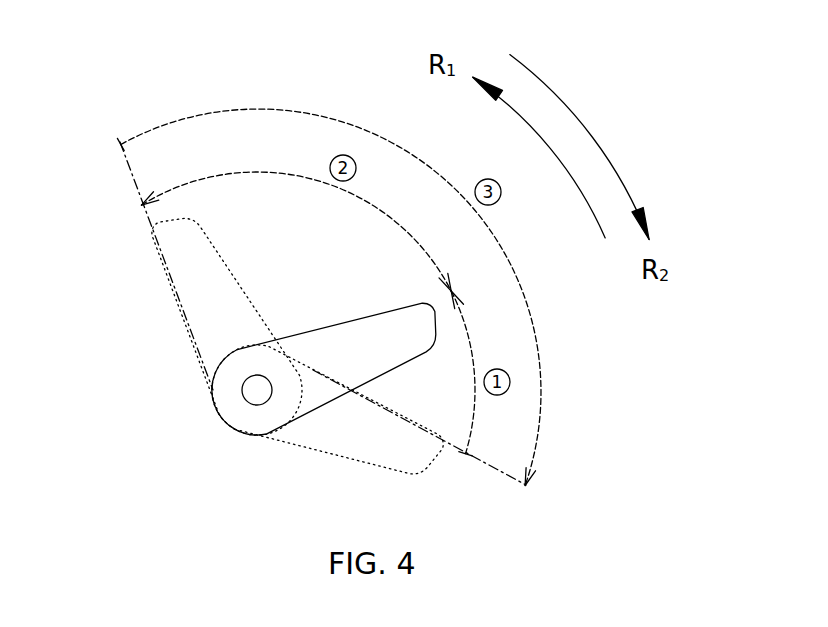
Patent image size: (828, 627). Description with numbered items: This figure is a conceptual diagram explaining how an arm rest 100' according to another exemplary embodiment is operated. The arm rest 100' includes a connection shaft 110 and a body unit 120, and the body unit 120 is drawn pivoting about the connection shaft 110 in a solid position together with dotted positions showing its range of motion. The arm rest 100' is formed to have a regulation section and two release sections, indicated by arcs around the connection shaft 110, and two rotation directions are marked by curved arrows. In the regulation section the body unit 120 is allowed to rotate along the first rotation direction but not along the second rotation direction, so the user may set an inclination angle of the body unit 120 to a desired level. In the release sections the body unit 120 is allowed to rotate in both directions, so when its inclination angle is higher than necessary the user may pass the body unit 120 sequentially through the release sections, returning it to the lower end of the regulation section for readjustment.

The arm rest 100' is at (260, 349).
The connection shaft 110 is at (258, 392).
The body unit 120 is at (340, 333).